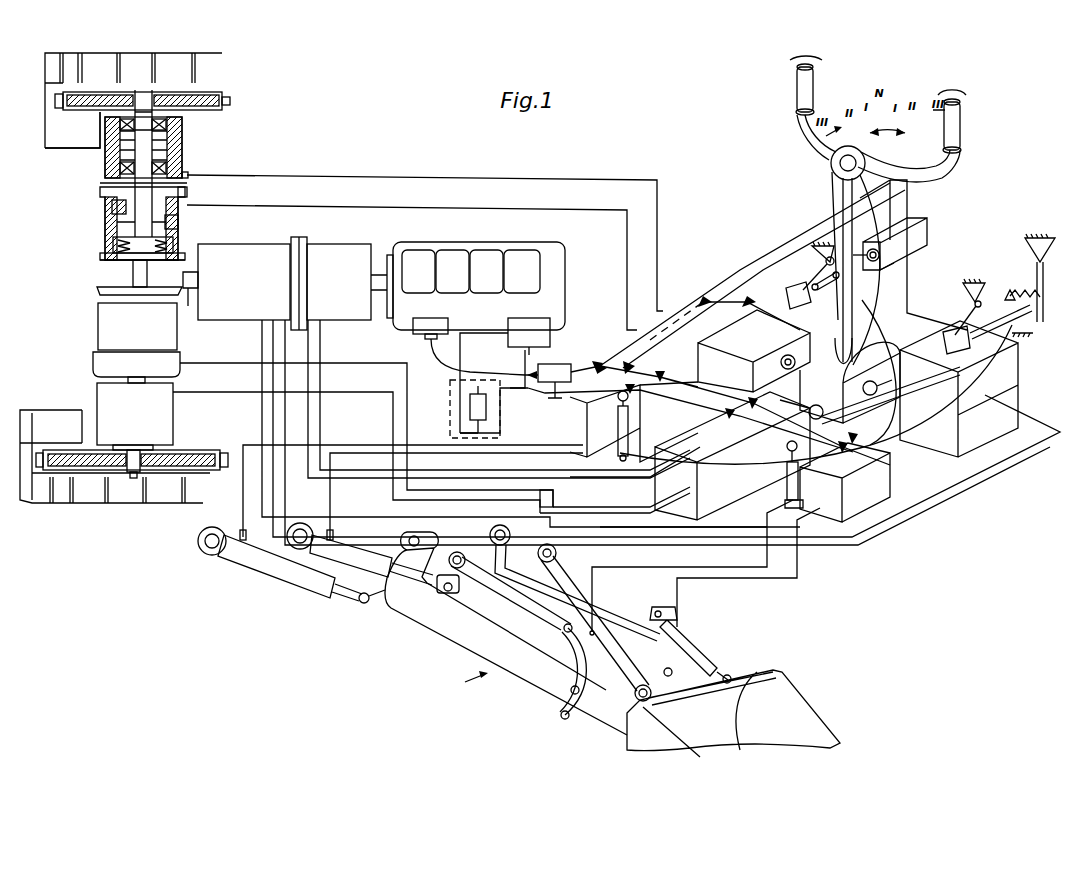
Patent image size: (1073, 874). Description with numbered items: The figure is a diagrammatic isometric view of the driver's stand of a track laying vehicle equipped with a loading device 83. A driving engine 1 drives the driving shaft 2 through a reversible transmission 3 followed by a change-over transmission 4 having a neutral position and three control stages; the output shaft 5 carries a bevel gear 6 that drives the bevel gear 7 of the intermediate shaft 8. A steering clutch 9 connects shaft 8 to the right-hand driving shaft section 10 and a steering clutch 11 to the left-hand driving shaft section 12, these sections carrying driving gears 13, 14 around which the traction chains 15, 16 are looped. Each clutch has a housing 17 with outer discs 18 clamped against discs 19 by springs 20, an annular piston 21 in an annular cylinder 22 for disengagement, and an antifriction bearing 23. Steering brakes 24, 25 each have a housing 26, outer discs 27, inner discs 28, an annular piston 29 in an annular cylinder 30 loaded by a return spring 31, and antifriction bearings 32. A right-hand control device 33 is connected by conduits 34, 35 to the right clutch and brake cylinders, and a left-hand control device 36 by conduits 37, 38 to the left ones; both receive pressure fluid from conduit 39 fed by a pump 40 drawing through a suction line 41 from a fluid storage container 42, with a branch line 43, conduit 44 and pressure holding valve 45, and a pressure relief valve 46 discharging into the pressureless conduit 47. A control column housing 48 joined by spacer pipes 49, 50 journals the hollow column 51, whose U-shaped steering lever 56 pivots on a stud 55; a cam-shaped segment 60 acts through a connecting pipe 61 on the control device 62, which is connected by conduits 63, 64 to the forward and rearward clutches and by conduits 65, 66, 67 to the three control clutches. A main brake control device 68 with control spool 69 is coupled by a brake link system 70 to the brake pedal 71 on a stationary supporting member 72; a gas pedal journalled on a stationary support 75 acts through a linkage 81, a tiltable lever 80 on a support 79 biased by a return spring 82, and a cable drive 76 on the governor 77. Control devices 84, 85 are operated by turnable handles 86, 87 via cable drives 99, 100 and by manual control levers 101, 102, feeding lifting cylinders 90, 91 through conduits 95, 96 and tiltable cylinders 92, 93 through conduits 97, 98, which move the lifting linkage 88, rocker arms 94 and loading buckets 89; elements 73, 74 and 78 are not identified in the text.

The driving engine 1 is at (537, 246).
The driving shaft 2 is at (378, 280).
The reversible transmission 3 is at (340, 255).
The change-over transmission 4 is at (247, 255).
The output shaft 5 is at (188, 298).
The bevel gear 6 is at (186, 272).
The bevel gear 7 is at (100, 290).
The intermediate shaft 8 is at (138, 268).
The steering clutch 9 is at (90, 331).
The right-hand driving shaft section 10 is at (132, 471).
The steering clutch 11 is at (98, 228).
The left-hand driving shaft section 12 is at (147, 128).
The driving gear 13 is at (192, 450).
The driving gear 14 is at (232, 101).
The traction chain 15 is at (84, 504).
The traction chain 16 is at (205, 63).
The clutch housing 17 is at (103, 254).
The outer discs 18 is at (178, 223).
The discs 19 is at (115, 253).
The springs 20 is at (166, 243).
The annular piston 21 is at (100, 210).
The annular cylinder 22 is at (112, 206).
The antifriction bearing 23 is at (186, 192).
The steering brake 24 is at (94, 153).
The steering brake 25 is at (91, 396).
The housing 26 is at (183, 141).
The outer discs 27 is at (173, 150).
The inner discs 28 is at (158, 122).
The annular piston 29 is at (116, 167).
The annular cylinder 30 is at (100, 183).
The return spring 31 is at (183, 132).
The antifriction bearings 32 is at (123, 118).
The right-hand control device 33 is at (1010, 400).
The conduit 34 is at (938, 492).
The conduit 35 is at (975, 488).
The left-hand control device 36 is at (738, 343).
The conduit 37 is at (462, 208).
The conduit 38 is at (450, 176).
The conduit 39 is at (742, 266).
The pump 40 is at (537, 327).
The suction line 41 is at (492, 383).
The fluid storage container 42 is at (450, 394).
The branch line 43 is at (543, 364).
The conduit 44 is at (517, 386).
The pressure holding valve 45 is at (468, 408).
The pressure relief valve 46 is at (573, 367).
The pressureless conduit 47 is at (513, 402).
The control column housing 48 is at (845, 412).
The spacer pipe 49 is at (907, 393).
The spacer pipe 50 is at (784, 367).
The hollow column 51 is at (840, 210).
The stud 55 is at (840, 163).
The U-shaped steering lever 56 is at (903, 160).
The cam-shaped segment 60 is at (838, 352).
The connecting pipe 61 is at (814, 405).
The control device 62 is at (729, 472).
The conduit 63 is at (568, 496).
The conduit 64 is at (608, 476).
The conduit 65 is at (643, 504).
The conduit 66 is at (665, 500).
The conduit 67 is at (660, 514).
The main brake control device 68 is at (912, 242).
The control spool 69 is at (870, 262).
The brake link system 70 is at (826, 292).
The brake pedal 71 is at (788, 291).
The stationary supporting member 72 is at (818, 250).
The frame 73 is at (910, 291).
The edge 74 is at (892, 282).
The stationary support 75 is at (974, 283).
The cable drive 76 is at (945, 340).
The governor 77 is at (418, 331).
The cable 78 is at (902, 448).
The support 79 is at (1043, 238).
The tiltable lever 80 is at (1043, 325).
The linkage 81 is at (993, 330).
The return spring 82 is at (1012, 288).
The loading device 83 is at (462, 683).
The control device 84 is at (857, 494).
The control device 85 is at (672, 426).
The turnable handle 86 is at (961, 128).
The turnable handle 87 is at (797, 88).
The lifting linkage 88 is at (424, 612).
The loading buckets 89 is at (800, 684).
The lifting cylinder 90 is at (266, 570).
The lifting cylinder 91 is at (365, 550).
The tiltable cylinder 92 is at (617, 670).
The tiltable cylinder 93 is at (692, 642).
The rocker arms 94 is at (582, 704).
The conduit 95 is at (351, 445).
The conduit 96 is at (377, 453).
The conduit 97 is at (633, 568).
The conduit 98 is at (752, 578).
The cable drive 99 is at (873, 342).
The cable drive 100 is at (754, 351).
The control lever 101 is at (786, 445).
The control lever 102 is at (631, 402).